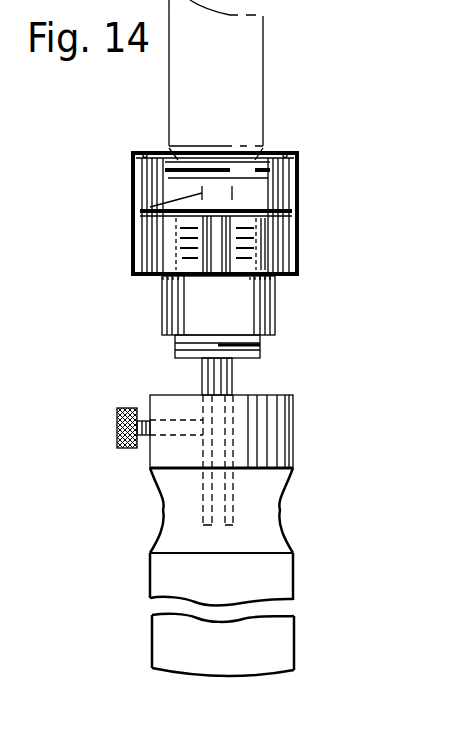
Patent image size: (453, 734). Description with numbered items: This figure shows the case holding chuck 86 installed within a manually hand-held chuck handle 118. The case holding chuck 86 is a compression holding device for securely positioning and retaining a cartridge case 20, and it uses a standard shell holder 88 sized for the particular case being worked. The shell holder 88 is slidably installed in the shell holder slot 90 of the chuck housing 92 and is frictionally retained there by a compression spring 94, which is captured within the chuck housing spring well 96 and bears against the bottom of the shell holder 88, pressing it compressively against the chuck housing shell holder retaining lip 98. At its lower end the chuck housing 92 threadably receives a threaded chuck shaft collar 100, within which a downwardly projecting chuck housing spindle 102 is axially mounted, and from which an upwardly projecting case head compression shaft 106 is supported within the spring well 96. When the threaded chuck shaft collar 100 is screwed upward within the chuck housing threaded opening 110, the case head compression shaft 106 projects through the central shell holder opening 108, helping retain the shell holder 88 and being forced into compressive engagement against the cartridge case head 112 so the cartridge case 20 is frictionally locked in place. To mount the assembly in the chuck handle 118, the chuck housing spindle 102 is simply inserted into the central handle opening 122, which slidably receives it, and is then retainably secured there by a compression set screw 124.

The cartridge case 20 is at (263, 52).
The case holding chuck 86 is at (342, 115).
The shell holder 88 is at (298, 160).
The shell holder slot 90 is at (168, 190).
The chuck housing 92 is at (258, 250).
The compression spring 94 is at (262, 232).
The chuck housing spring well 96 is at (180, 241).
The chuck housing shell holder retaining lip 98 is at (275, 147).
The threaded chuck shaft collar 100 is at (260, 347).
The chuck housing spindle 102 is at (232, 370).
The case head compression shaft 106 is at (140, 212).
The central shell holder opening 108 is at (298, 185).
The chuck housing threaded opening 110 is at (258, 297).
The cartridge case head 112 is at (134, 154).
The chuck handle 118 is at (272, 570).
The central handle opening 122 is at (235, 497).
The compression set screw 124 is at (125, 407).